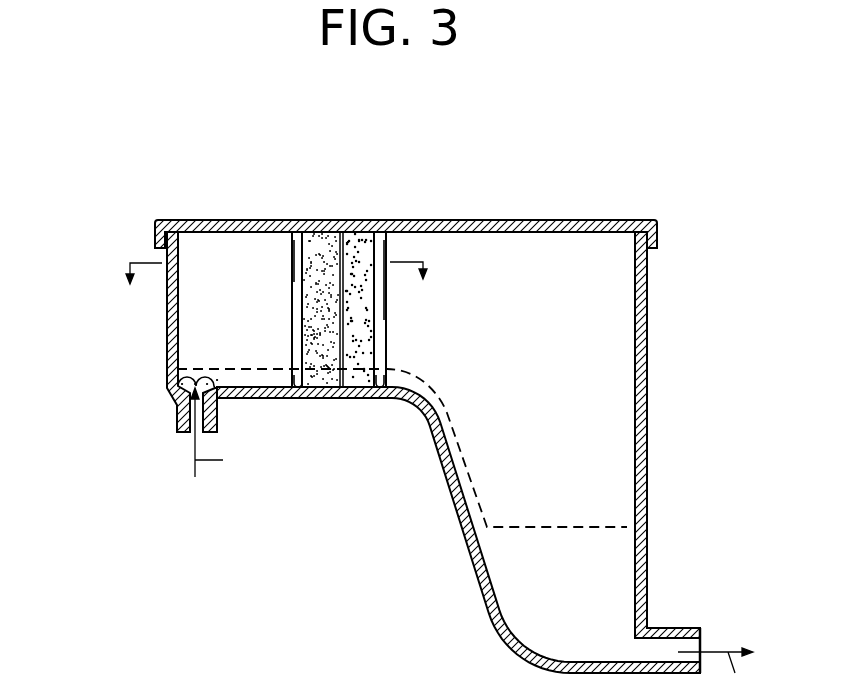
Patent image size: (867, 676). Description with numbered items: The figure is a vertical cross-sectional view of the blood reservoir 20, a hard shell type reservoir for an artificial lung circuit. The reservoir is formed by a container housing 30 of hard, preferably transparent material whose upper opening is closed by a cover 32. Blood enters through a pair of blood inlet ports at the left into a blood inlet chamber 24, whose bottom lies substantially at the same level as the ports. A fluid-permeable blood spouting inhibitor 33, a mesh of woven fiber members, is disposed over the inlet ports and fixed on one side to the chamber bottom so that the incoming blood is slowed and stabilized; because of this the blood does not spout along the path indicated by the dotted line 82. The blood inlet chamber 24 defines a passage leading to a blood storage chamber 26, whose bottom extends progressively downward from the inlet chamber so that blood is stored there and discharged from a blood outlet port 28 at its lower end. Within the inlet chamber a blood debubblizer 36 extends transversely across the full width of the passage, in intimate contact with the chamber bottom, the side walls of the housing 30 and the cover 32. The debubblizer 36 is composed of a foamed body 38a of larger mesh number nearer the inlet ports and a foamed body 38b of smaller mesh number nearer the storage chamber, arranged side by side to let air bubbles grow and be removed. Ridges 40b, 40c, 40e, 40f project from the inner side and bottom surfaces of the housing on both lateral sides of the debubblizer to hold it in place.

The blood reservoir 20 is at (644, 212).
The blood inlet chamber 24 is at (212, 335).
The blood storage chamber 26 is at (630, 447).
The blood outlet port 28 is at (678, 632).
The container housing 30 is at (645, 383).
The cover 32 is at (590, 230).
The blood spouting inhibitor 33 is at (213, 386).
The blood debubblizer 36 is at (330, 224).
The foamed body of larger mesh number 38a is at (300, 234).
The foamed body of smaller mesh number 38b is at (368, 238).
The ridge 40b is at (301, 382).
The ridge 40c is at (297, 283).
The ridge 40e is at (381, 383).
The ridge 40f is at (380, 314).
The dotted line 82 is at (276, 369).